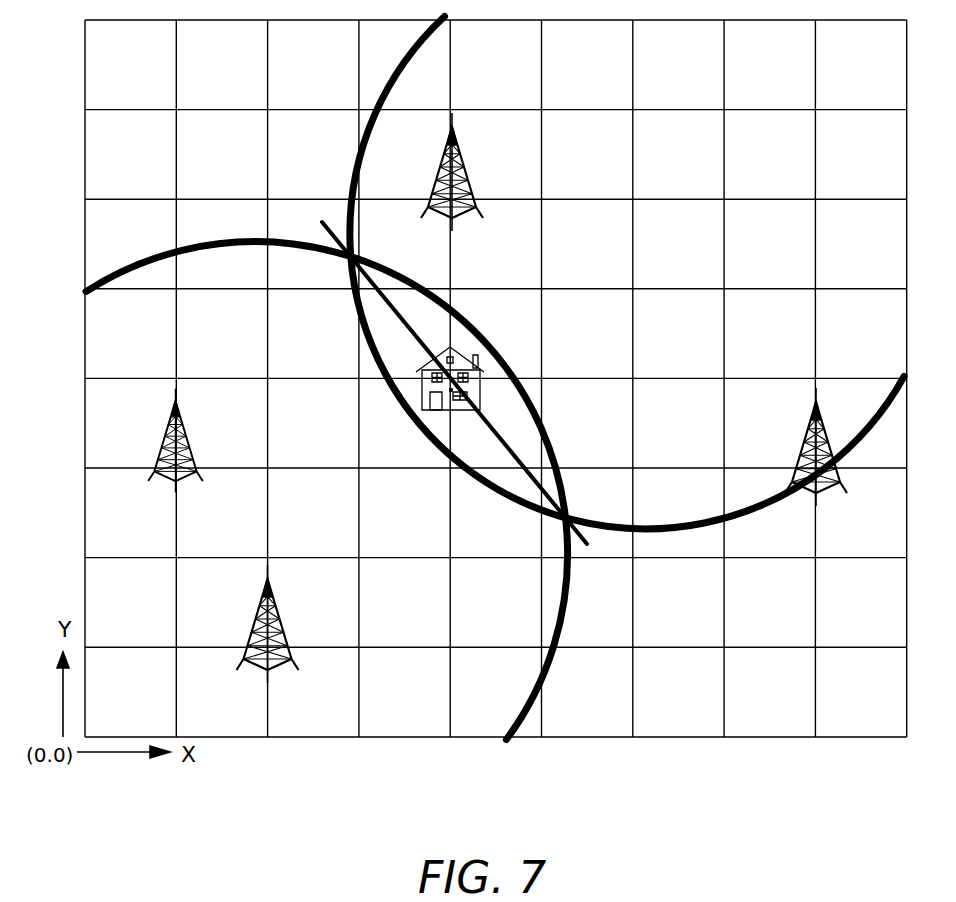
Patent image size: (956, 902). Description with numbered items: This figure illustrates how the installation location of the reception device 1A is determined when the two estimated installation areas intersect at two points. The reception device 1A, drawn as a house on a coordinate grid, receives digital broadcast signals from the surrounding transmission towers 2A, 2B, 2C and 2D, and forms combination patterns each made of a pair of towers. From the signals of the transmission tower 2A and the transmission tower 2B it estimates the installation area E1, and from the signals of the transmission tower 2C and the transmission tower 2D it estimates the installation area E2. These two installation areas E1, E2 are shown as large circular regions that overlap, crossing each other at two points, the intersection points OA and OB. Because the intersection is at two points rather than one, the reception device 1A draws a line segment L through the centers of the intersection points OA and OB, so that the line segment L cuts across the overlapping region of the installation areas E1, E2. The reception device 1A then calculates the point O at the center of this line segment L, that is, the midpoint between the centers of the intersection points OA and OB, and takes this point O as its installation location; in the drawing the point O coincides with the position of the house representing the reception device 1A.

The reception device 1A is at (463, 353).
The transmission tower 2A is at (466, 160).
The transmission tower 2B is at (832, 440).
The transmission tower 2C is at (279, 615).
The transmission tower 2D is at (190, 443).
The installation area E1 is at (603, 527).
The installation area E2 is at (294, 247).
The line segment L is at (513, 443).
The intersection point OA is at (336, 247).
The intersection point OB is at (568, 511).
The point O is at (421, 385).